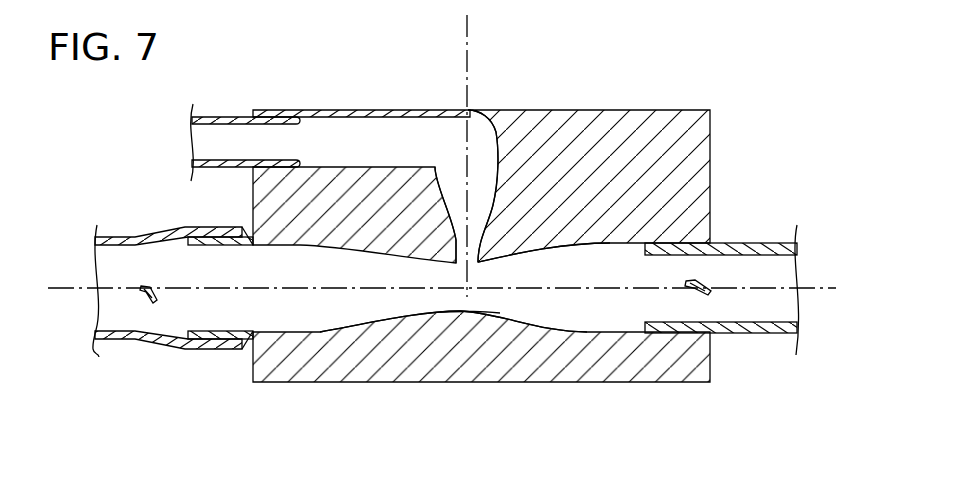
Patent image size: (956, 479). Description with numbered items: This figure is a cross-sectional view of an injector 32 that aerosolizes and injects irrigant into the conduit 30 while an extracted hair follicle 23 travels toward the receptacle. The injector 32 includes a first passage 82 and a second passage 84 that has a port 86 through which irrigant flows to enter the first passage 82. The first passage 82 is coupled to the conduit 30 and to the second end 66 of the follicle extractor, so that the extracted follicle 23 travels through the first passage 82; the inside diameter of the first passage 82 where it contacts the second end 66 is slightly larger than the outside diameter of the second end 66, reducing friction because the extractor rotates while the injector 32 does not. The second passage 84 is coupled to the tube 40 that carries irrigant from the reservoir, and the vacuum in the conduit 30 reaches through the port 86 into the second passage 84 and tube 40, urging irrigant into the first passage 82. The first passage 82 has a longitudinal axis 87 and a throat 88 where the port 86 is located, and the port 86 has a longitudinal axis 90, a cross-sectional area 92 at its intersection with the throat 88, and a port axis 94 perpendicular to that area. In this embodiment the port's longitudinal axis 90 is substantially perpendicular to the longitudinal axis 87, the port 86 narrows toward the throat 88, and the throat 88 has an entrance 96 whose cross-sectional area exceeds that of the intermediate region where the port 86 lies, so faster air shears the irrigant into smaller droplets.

The extracted hair follicle 23 is at (142, 287).
The conduit 30 is at (143, 343).
The injector 32 is at (612, 110).
The tube 40 is at (232, 110).
The second end of the follicle extractor 66 is at (757, 342).
The first passage 82 is at (283, 307).
The second passage 84 is at (345, 133).
The port 86 is at (473, 256).
The longitudinal axis of the first passage 87 is at (70, 288).
The throat 88 is at (480, 290).
The longitudinal axis of the port 90 is at (465, 40).
The cross-sectional area 92 is at (456, 264).
The port axis 94 is at (468, 281).
The entrance 96 is at (612, 268).